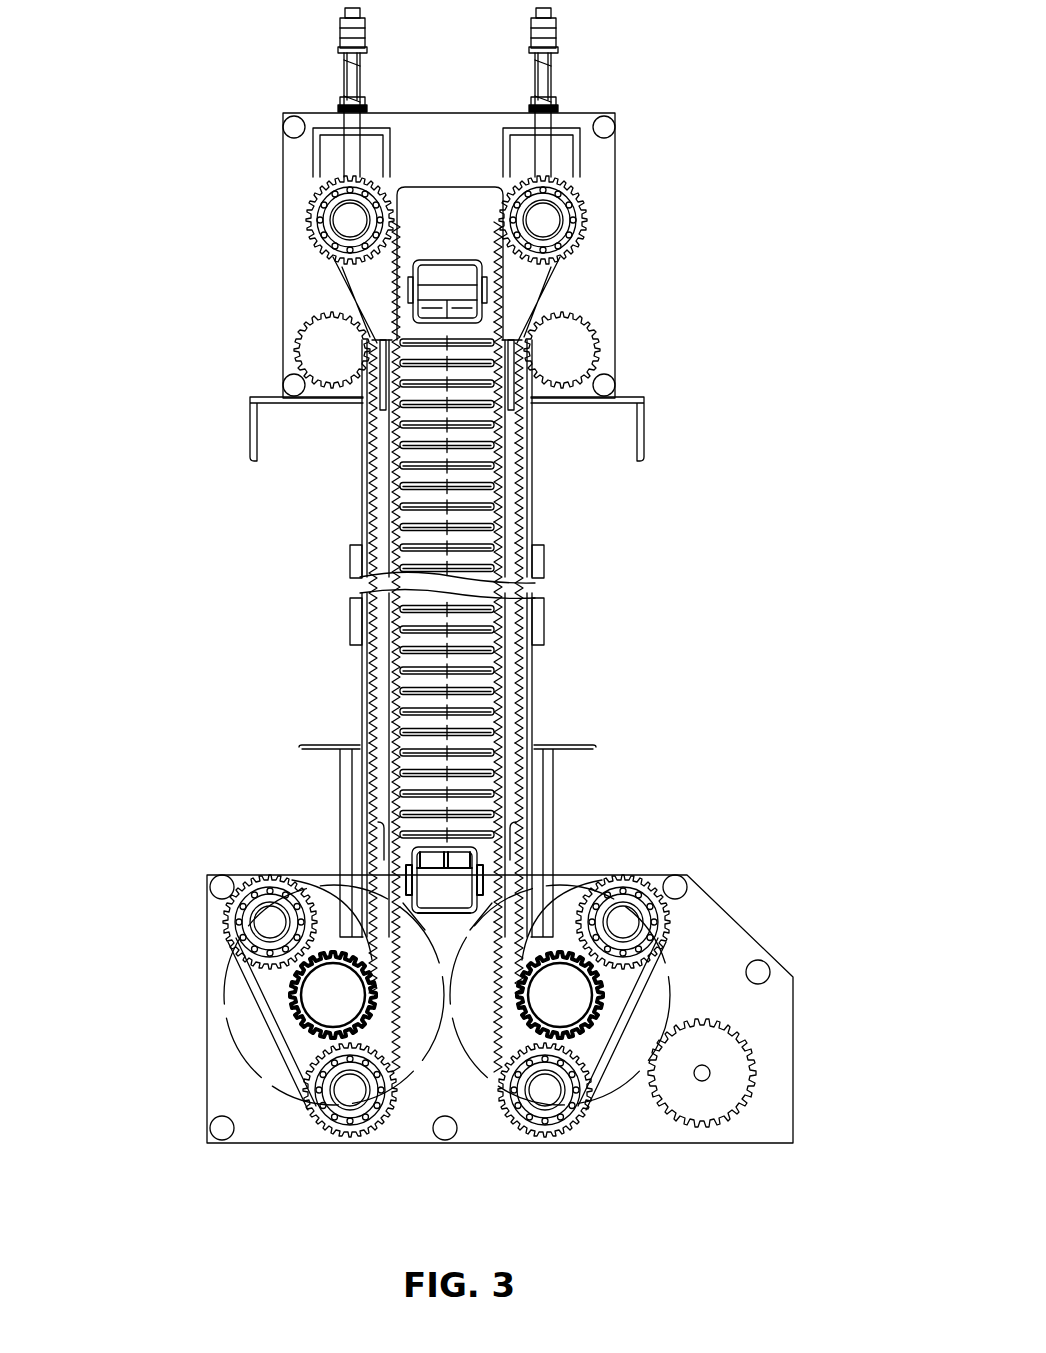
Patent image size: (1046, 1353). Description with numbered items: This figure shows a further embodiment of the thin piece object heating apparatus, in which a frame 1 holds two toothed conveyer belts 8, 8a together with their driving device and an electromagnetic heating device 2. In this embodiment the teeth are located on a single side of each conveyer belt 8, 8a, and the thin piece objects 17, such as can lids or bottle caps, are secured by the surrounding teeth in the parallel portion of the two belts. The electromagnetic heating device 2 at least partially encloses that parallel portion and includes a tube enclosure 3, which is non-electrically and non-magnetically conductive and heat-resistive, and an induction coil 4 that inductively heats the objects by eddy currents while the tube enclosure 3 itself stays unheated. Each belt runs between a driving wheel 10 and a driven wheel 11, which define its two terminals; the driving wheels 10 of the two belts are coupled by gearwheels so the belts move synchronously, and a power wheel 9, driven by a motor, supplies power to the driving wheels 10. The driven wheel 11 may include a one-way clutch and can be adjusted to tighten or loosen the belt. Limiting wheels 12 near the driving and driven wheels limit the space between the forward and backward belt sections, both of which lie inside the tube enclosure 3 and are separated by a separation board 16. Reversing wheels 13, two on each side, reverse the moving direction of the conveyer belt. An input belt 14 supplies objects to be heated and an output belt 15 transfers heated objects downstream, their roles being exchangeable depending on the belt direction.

The frame 1 is at (693, 935).
The electromagnetic heating device 2 is at (305, 599).
The tube enclosure 3 is at (533, 508).
The induction coil 4 is at (543, 620).
The conveyer belt 8 is at (338, 285).
The conveyer belt 8a is at (565, 277).
The power wheel/gear 9 is at (730, 1052).
The driving wheel 10 is at (275, 995).
The driven wheel 11 is at (548, 223).
The limiting wheel 12 is at (562, 350).
The reversing wheel 13 is at (270, 925).
The input belt 14 is at (467, 870).
The output belt 15 is at (447, 293).
The separation board 16 is at (385, 822).
The thin piece object 17 is at (412, 730).